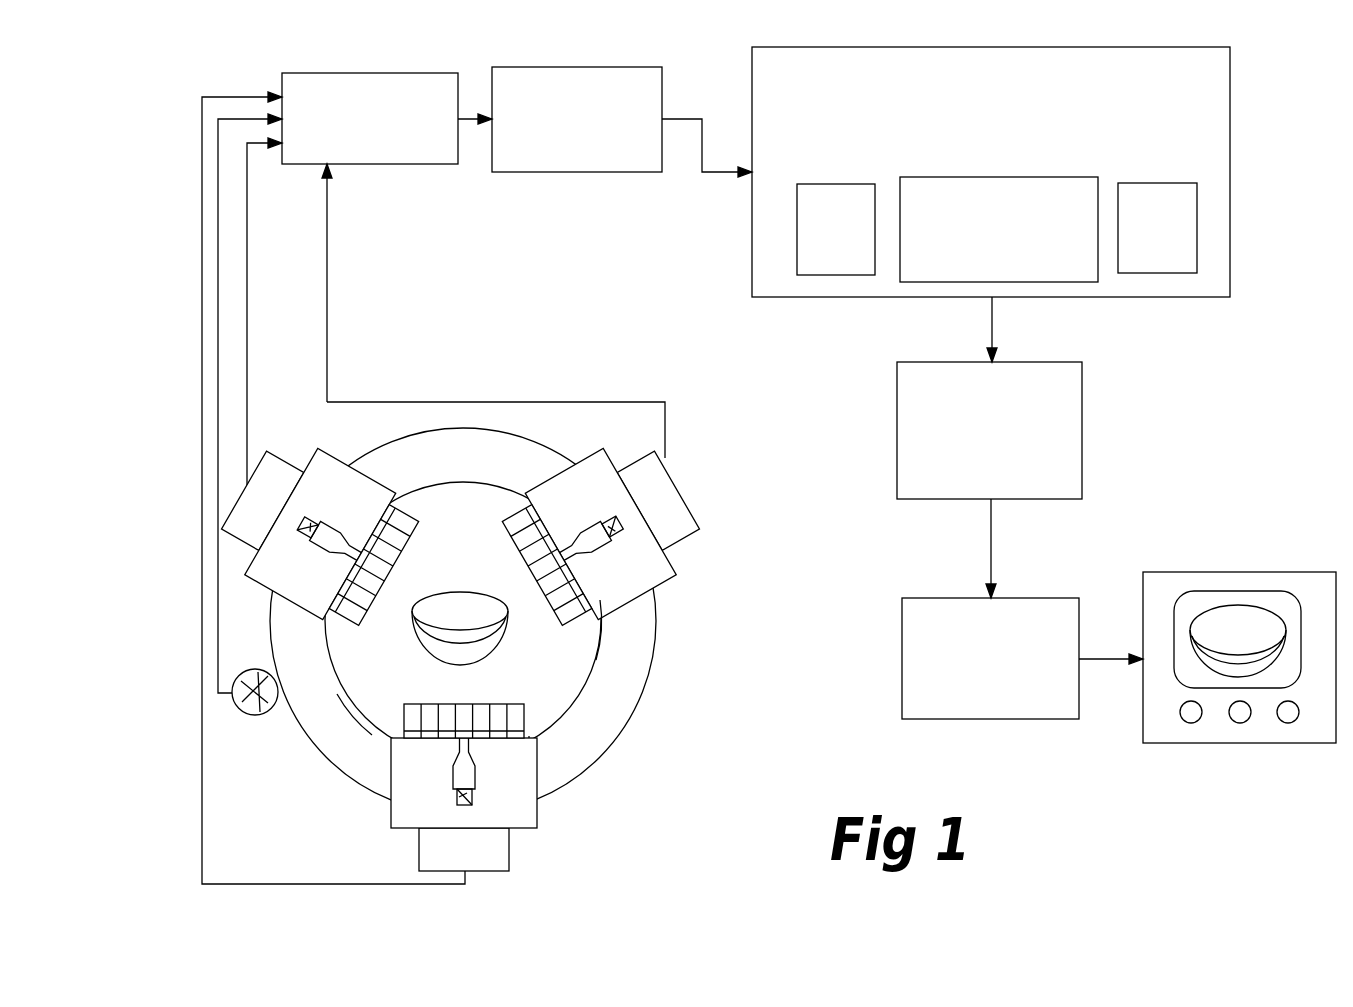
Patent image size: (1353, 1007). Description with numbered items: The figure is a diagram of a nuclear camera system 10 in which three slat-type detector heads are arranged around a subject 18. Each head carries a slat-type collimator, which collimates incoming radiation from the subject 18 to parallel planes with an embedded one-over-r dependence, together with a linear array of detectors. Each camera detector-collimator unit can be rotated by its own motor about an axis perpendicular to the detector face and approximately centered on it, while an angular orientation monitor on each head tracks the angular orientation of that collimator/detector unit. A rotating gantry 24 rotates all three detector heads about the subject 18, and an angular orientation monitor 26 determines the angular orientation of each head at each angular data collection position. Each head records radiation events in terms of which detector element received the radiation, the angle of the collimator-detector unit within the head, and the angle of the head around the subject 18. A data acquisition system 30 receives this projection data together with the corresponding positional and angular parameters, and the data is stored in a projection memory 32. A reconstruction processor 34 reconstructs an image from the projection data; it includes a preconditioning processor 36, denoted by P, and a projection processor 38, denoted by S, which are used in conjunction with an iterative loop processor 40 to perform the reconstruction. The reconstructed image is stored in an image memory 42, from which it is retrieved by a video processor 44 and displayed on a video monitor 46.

The nuclear camera system 10 is at (655, 735).
The subject 18 is at (437, 591).
The rotating gantry 24 is at (625, 672).
The angular orientation monitor 26 is at (247, 718).
The data acquisition system 30 is at (413, 164).
The projection memory 32 is at (618, 172).
The reconstruction processor 34 is at (750, 238).
The preconditioning processor 36 is at (838, 184).
The projection processor 38 is at (1158, 183).
The iterative loop processor 40 is at (948, 282).
The image memory 42 is at (1082, 464).
The video processor 44 is at (948, 598).
The video monitor 46 is at (1191, 743).